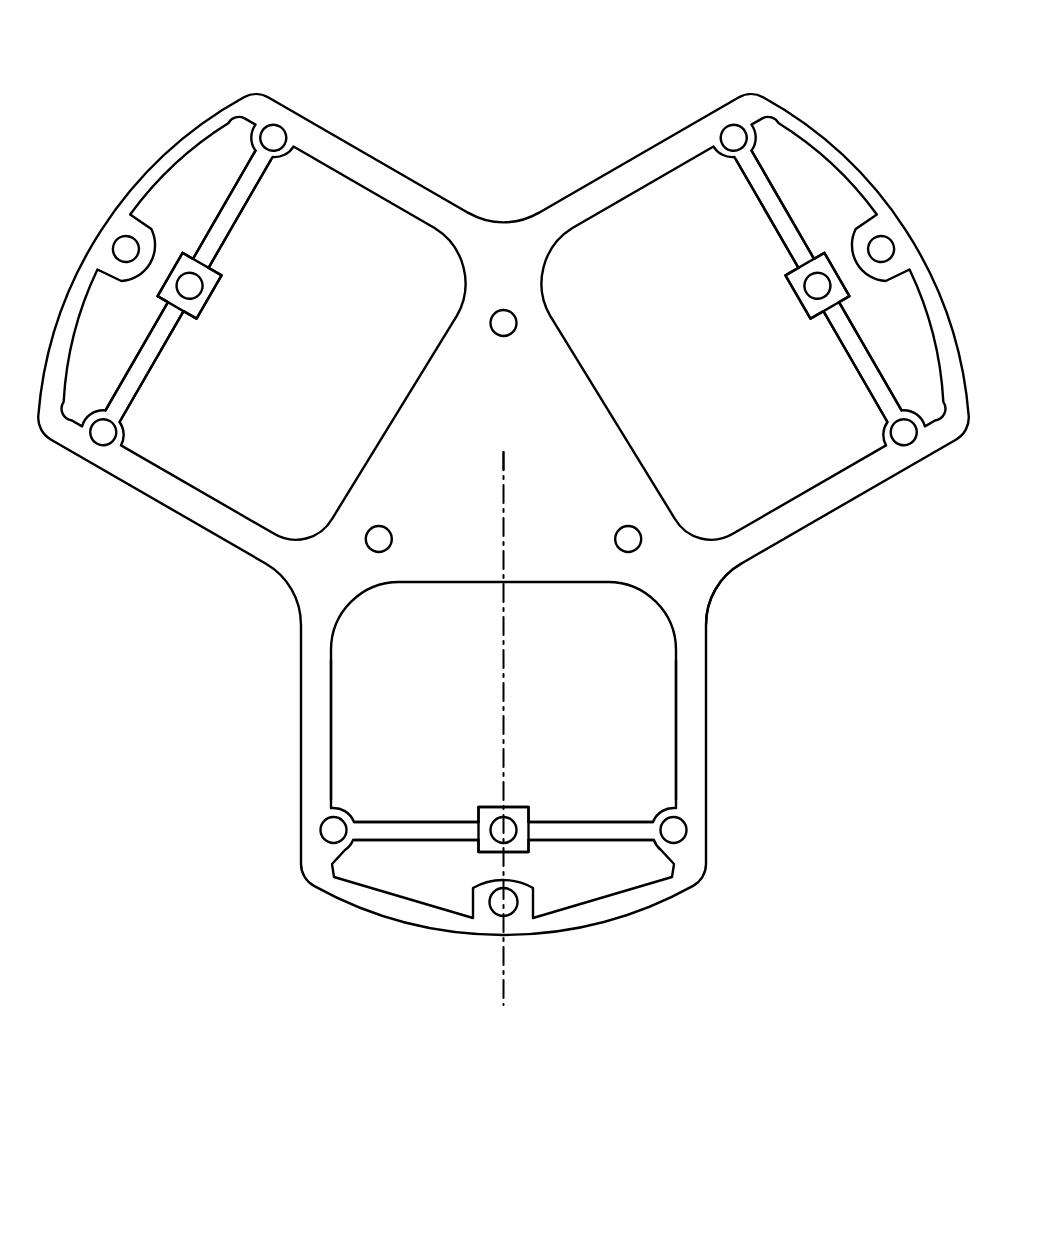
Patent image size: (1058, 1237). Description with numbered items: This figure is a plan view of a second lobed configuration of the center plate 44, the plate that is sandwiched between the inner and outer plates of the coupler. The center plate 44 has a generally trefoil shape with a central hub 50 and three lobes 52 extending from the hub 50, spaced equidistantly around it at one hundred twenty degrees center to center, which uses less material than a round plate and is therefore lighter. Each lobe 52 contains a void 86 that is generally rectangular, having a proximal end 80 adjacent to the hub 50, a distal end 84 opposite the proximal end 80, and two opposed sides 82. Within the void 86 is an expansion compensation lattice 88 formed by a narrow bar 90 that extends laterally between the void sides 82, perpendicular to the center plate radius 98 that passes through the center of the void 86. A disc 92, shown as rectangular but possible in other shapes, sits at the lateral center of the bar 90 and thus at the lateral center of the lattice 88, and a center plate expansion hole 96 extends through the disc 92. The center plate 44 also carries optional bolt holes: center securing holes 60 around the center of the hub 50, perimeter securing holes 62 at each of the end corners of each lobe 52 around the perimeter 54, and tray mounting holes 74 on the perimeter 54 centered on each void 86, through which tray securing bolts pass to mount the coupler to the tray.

The center plate 44 is at (239, 40).
The central hub 50 is at (490, 452).
The lobe 52 is at (378, 145).
The perimeter 54 is at (818, 105).
The center securing hole 60 is at (497, 336).
The perimeter securing hole 62 is at (320, 832).
The tray mounting hole 74 is at (500, 917).
The proximal end 80 is at (482, 584).
The side 82 is at (335, 708).
The distal end 84 is at (607, 893).
The void 86 is at (457, 702).
The expansion compensation lattice 88 is at (248, 323).
The narrow bar 90 is at (420, 821).
The disc 92 is at (530, 811).
The center plate expansion hole 96 is at (492, 829).
The center plate radius 98 is at (513, 551).